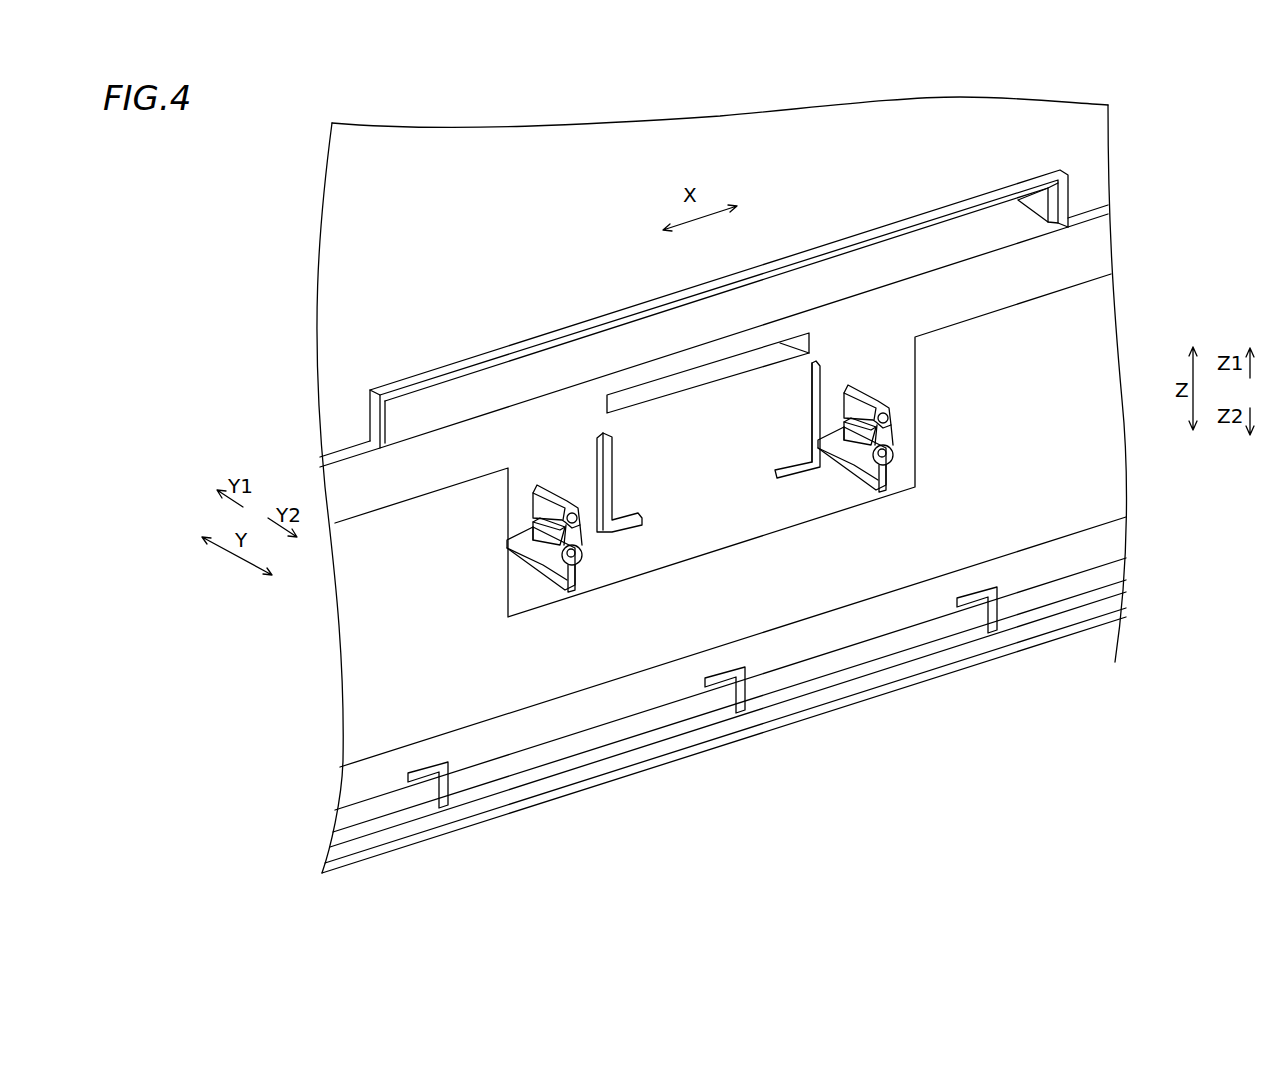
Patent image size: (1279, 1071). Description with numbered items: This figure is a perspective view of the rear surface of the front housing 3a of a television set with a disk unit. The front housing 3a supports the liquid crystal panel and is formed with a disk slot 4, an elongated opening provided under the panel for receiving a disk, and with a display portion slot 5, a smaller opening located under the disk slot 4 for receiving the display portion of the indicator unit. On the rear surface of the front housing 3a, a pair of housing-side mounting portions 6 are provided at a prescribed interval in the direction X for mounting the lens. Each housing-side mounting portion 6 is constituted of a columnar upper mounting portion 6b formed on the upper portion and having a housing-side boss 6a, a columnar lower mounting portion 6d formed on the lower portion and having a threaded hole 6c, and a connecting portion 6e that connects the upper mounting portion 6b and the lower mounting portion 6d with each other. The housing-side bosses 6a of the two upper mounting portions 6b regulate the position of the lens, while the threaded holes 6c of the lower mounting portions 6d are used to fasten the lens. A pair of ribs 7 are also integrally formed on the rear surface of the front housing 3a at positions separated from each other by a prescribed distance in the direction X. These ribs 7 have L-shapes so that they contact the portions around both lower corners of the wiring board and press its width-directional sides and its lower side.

The front housing 3a is at (923, 178).
The disk slot 4 is at (1005, 213).
The display portion slot 5 is at (785, 358).
The housing-side mounting portion 6 is at (713, 518).
The housing-side boss 6a is at (565, 521).
The upper mounting portion 6b is at (557, 513).
The threaded hole 6c is at (568, 592).
The lower mounting portion 6d is at (557, 578).
The connecting portion 6e is at (533, 530).
The rib 7 is at (622, 530).